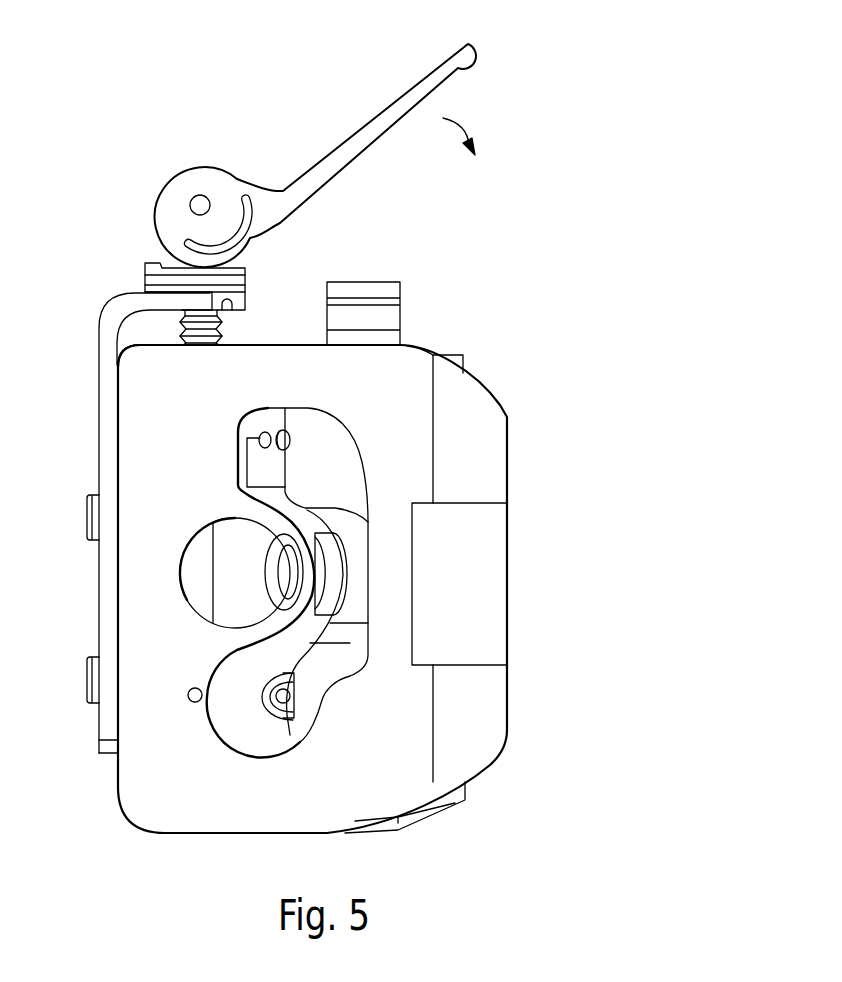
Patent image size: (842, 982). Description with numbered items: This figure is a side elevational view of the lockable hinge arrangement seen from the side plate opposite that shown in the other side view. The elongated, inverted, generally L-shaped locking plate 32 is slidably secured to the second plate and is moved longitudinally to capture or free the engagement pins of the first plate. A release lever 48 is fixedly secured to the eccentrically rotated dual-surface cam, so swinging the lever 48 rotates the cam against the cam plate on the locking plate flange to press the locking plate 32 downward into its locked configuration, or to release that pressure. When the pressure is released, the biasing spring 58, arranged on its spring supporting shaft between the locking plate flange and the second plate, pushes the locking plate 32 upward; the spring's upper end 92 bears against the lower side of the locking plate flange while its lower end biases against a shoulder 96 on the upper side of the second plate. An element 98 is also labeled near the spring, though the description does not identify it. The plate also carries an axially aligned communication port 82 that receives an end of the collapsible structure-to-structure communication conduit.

The release lever 48 is at (450, 68).
The upper end of release spring 92 is at (214, 310).
The adjustment screw 98 is at (222, 322).
The biasing spring 58 is at (172, 328).
The locking plate 32 is at (98, 437).
The shoulder 96 is at (143, 338).
The communication port 82 is at (238, 626).